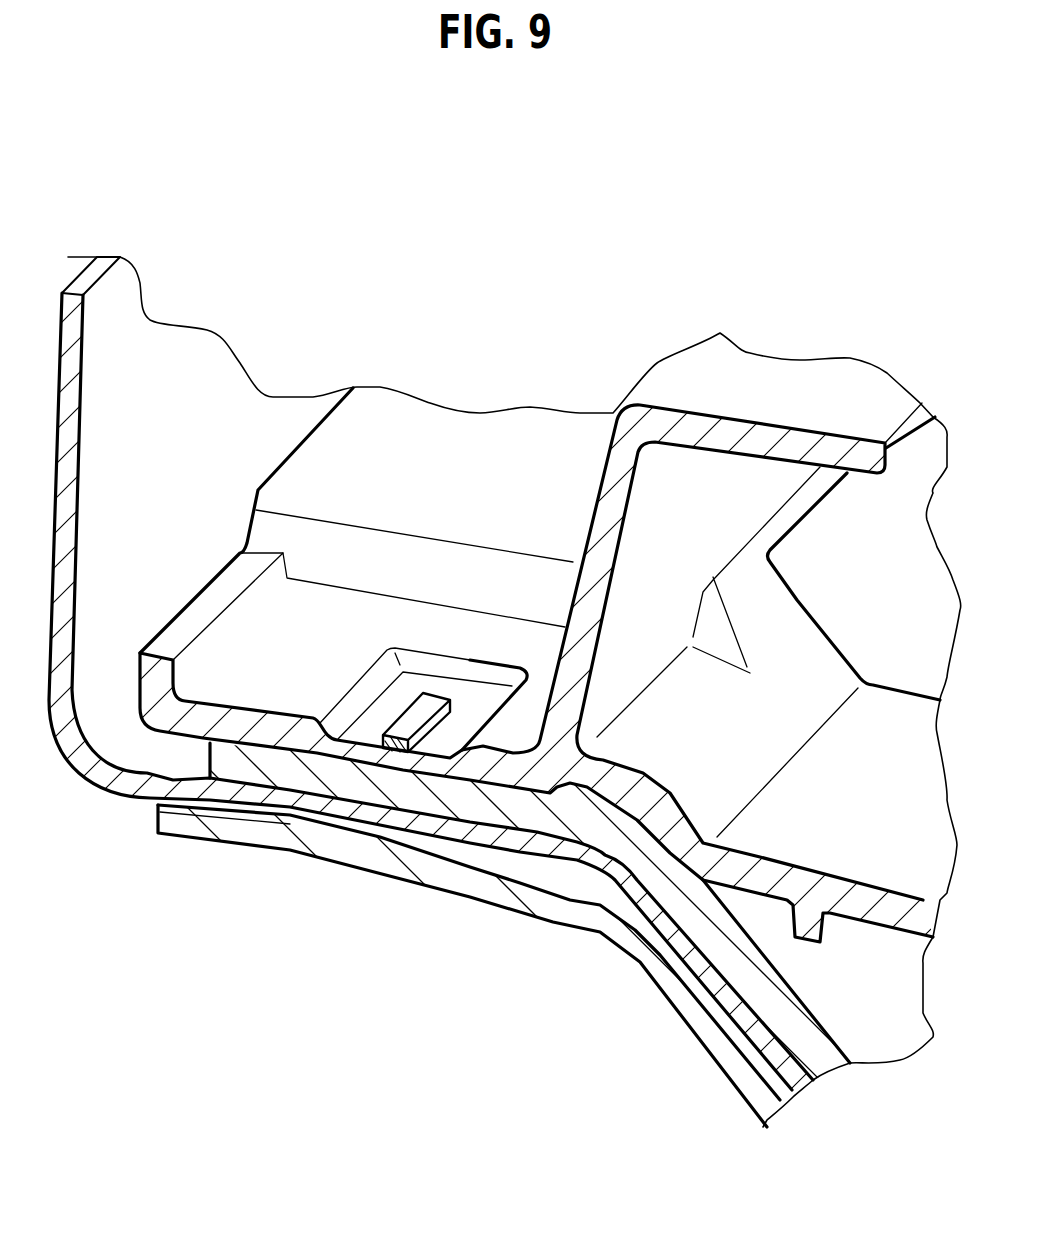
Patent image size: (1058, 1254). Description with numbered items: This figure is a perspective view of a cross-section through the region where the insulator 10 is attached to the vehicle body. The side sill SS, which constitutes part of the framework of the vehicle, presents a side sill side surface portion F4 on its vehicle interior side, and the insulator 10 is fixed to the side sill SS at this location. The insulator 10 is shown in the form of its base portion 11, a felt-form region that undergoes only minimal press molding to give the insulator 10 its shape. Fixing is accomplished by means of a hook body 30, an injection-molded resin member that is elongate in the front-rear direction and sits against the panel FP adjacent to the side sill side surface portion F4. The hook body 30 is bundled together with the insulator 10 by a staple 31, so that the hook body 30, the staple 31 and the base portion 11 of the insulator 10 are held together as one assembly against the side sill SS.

The side sill side surface portion F4 is at (320, 272).
The hook body 30 is at (780, 390).
The staple 31 is at (410, 720).
The floor panel FP is at (102, 778).
The side sill SS is at (240, 838).
The base portion 11 is at (773, 1013).
The insulator 10 is at (529, 627).